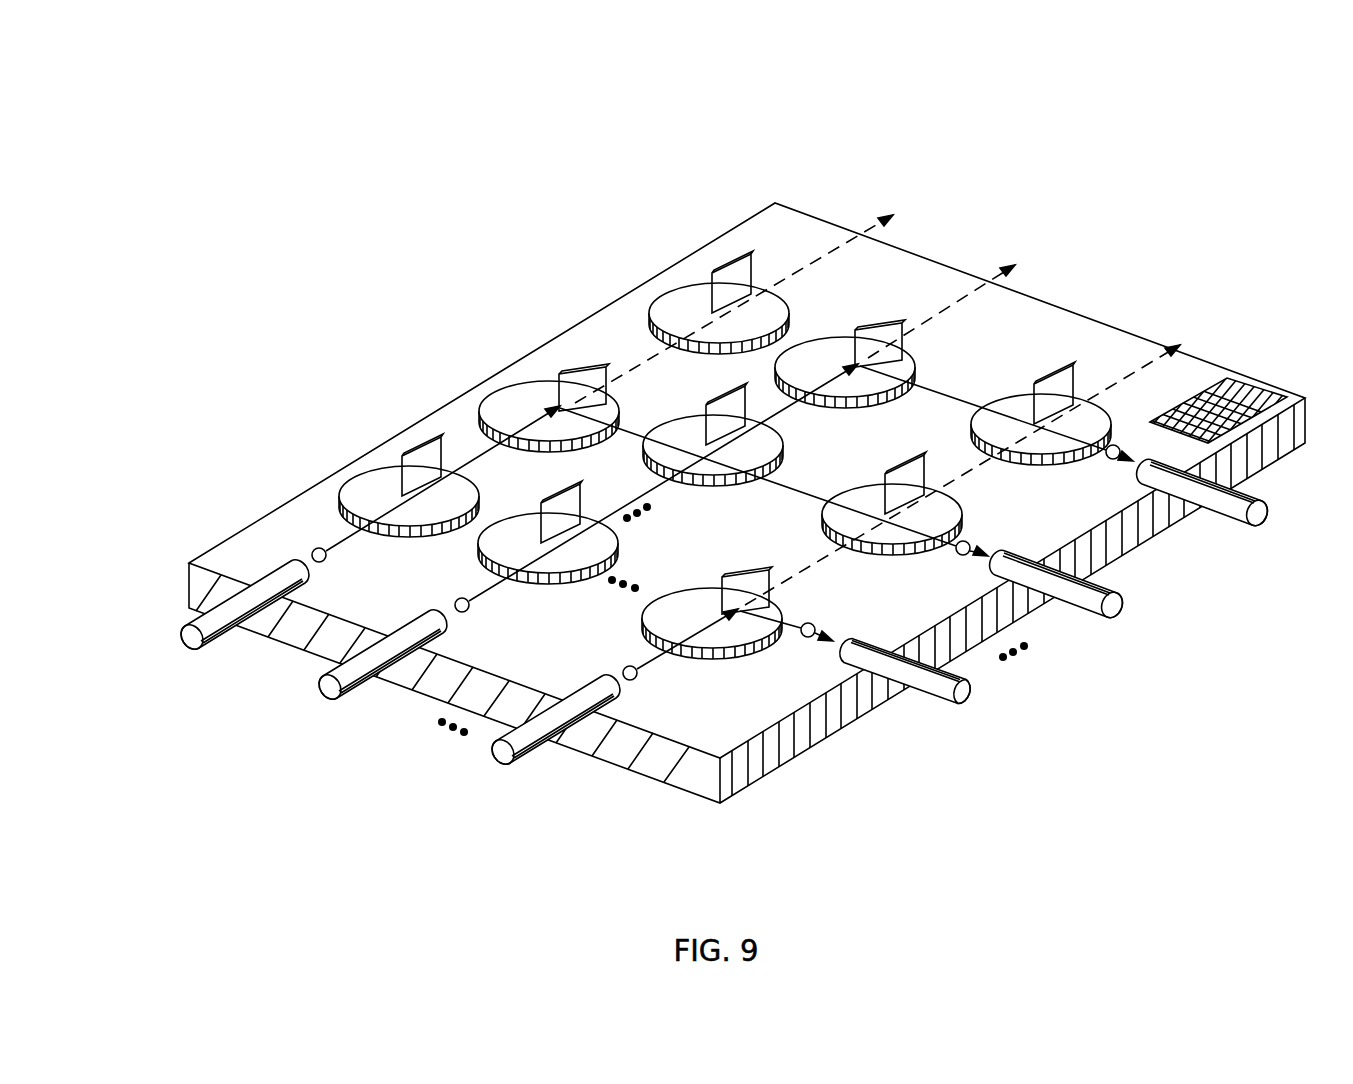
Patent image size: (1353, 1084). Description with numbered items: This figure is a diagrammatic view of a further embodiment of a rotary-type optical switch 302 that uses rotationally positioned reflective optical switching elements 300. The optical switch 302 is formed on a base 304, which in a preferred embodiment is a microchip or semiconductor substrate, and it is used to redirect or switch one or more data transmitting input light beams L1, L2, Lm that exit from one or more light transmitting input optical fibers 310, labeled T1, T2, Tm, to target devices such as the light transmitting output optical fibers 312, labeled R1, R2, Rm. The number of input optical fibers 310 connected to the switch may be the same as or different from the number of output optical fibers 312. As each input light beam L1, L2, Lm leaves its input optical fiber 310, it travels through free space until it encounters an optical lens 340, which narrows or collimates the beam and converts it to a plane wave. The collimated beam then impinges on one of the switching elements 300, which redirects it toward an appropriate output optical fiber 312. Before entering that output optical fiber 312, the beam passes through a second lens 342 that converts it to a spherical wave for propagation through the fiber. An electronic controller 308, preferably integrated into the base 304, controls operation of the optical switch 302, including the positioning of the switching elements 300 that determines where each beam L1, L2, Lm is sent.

The optical switching element 300 is at (655, 292).
The optical switch 302 is at (730, 442).
The base 304 is at (758, 721).
The electronic controller 308 is at (1242, 375).
The input optical fiber 310 is at (388, 682).
The output optical fiber 312 is at (1071, 610).
The optical lens 340 is at (323, 564).
The second lens 342 is at (804, 640).
The first input optical fiber T1 is at (232, 617).
The second input optical fiber T2 is at (371, 668).
The mth input optical fiber Tm is at (546, 732).
The first input light beam L1 is at (609, 395).
The second input light beam L2 is at (742, 443).
The mth input light beam Lm is at (908, 520).
The first output optical fiber R1 is at (1219, 500).
The second output optical fiber R2 is at (1073, 587).
The mth output optical fiber Rm is at (927, 675).